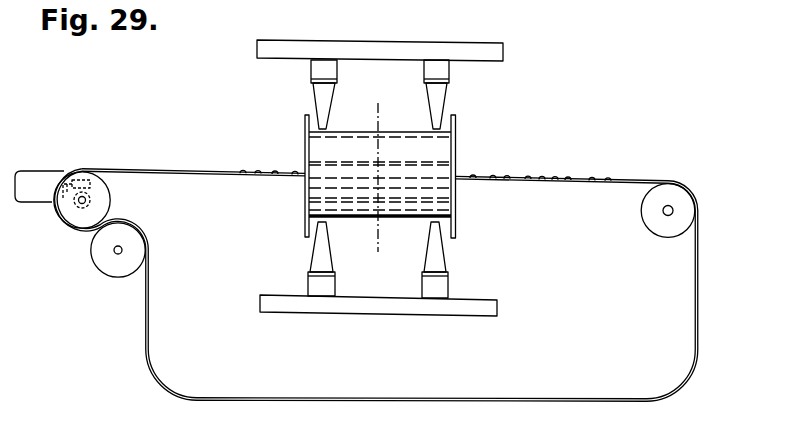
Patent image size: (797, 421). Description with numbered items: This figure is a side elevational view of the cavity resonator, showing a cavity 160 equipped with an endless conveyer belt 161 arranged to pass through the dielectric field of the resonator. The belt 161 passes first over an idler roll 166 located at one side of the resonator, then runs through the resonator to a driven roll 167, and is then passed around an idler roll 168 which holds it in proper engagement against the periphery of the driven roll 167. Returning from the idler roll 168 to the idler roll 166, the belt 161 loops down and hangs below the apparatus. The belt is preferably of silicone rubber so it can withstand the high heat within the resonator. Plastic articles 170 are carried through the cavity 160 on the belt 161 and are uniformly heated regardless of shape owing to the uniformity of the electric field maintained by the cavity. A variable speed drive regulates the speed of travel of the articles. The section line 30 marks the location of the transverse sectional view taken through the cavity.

The section line 30- 30 is at (363, 105).
The cavity 160 is at (445, 153).
The endless conveyer belt 161 is at (184, 171).
The idler roll 166 is at (690, 212).
The driven roll 167 is at (100, 185).
The idler roll 168 is at (127, 273).
The plastic articles 170 is at (274, 172).